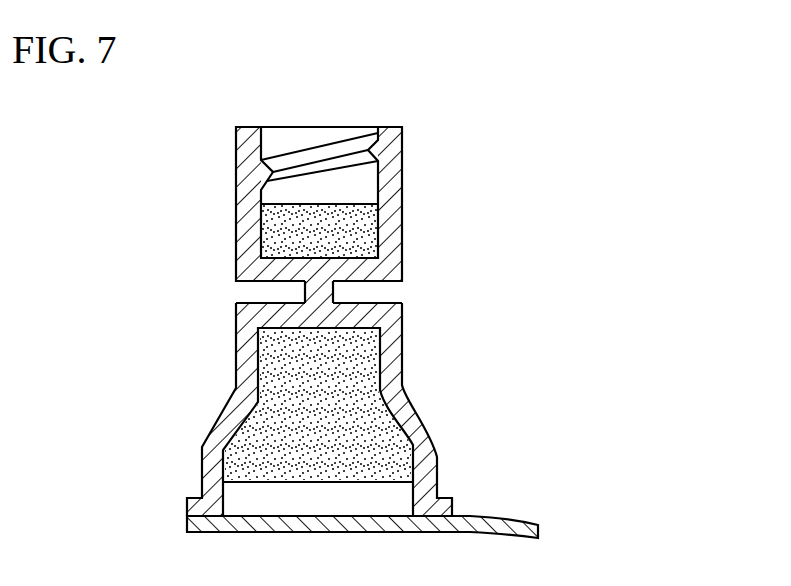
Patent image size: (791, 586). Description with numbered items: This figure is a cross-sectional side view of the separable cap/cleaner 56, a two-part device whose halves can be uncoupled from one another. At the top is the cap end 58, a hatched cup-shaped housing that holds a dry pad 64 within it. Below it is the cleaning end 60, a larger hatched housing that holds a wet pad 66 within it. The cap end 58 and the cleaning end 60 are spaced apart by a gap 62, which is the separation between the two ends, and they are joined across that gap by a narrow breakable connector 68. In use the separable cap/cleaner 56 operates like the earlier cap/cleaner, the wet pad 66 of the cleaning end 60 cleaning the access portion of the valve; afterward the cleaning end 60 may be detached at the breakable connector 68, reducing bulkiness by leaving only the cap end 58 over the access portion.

The separable cap/cleaner 56 is at (524, 107).
The cap end 58 is at (403, 189).
The cleaning end 60 is at (403, 385).
The gap 62 is at (390, 303).
The dry pad 64 is at (297, 230).
The wet pad 66 is at (278, 418).
The breakable connector 68 is at (304, 297).